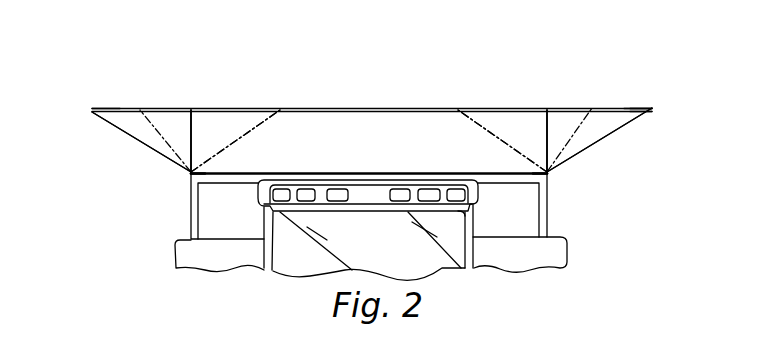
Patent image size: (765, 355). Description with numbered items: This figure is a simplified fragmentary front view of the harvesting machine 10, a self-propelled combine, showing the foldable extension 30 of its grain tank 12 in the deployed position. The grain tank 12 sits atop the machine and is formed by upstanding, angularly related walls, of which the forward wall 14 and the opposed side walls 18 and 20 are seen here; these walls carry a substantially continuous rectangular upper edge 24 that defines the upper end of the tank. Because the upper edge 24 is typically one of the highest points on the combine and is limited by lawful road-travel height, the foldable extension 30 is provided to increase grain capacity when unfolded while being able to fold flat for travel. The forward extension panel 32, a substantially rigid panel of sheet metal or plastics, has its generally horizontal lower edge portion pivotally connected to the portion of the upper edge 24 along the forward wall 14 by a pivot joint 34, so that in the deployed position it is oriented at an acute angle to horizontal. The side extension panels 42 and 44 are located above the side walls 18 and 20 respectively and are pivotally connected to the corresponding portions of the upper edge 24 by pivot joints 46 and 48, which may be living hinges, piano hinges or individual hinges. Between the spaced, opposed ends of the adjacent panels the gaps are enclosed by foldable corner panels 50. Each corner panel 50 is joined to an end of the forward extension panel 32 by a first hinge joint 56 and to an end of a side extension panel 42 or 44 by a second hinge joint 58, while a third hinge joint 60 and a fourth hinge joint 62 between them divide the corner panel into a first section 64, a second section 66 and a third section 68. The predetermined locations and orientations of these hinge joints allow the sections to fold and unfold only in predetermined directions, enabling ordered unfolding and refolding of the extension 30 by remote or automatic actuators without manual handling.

The harvesting machine 10 is at (214, 284).
The grain tank 12 is at (190, 202).
The forward wall 14 is at (526, 206).
The side wall 18 is at (552, 228).
The side wall 20 is at (182, 237).
The upper edge 24 is at (278, 174).
The foldable extension 30 is at (652, 108).
The forward extension panel 32 is at (367, 108).
The pivot joint 34 is at (358, 172).
The side extension panel 42 is at (609, 134).
The side extension panel 44 is at (140, 141).
The pivot joint 46 is at (550, 173).
The pivot joint 48 is at (189, 173).
The foldable corner panel 50 is at (172, 109).
The first hinge joint 56 is at (249, 134).
The second hinge joint 58 is at (113, 125).
The third hinge joint 60 is at (198, 120).
The fourth hinge joint 62 is at (153, 127).
The first section 64 is at (259, 110).
The second section 66 is at (186, 120).
The third section 68 is at (108, 112).